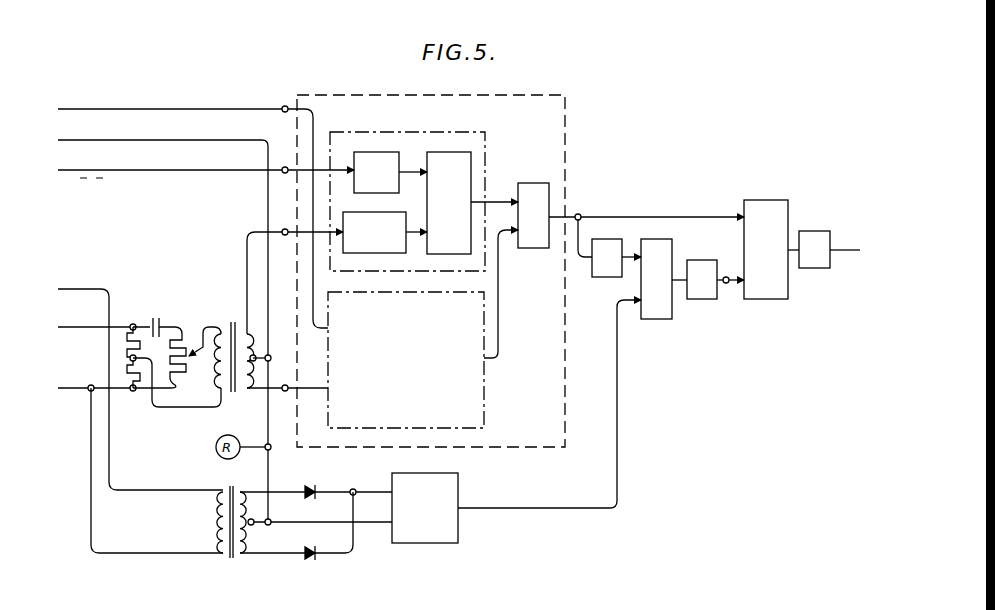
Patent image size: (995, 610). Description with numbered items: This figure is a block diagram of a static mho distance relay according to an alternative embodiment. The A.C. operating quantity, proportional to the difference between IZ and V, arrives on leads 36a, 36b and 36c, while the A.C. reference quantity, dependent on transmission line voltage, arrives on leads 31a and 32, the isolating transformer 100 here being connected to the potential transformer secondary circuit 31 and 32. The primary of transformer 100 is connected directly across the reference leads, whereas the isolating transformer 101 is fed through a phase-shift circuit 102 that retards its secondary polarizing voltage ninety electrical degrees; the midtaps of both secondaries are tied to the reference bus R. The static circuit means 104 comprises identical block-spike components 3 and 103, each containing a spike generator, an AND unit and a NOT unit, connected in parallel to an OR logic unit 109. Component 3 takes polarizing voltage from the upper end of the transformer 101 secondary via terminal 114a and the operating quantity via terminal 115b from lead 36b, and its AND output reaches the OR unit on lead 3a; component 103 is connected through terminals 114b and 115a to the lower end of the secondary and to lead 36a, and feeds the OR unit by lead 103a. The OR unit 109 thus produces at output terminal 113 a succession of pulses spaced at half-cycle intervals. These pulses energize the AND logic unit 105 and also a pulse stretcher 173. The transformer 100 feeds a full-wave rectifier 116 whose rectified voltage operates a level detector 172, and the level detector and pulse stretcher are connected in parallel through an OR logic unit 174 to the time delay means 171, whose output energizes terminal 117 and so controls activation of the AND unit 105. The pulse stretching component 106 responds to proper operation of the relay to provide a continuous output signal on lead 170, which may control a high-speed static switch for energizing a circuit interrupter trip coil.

The block-spike component 3 is at (398, 132).
The lead 3a is at (495, 201).
The potential transformer secondary circuit lead 31 is at (88, 289).
The lead 31a is at (96, 327).
The lead 32 is at (88, 388).
The upper lead 36a is at (99, 109).
The lower lead 36b is at (99, 170).
The lead 36c is at (99, 140).
The isolating transformer 100 is at (247, 489).
The isolating transformer 101 is at (240, 322).
The phase-shift circuit 102 is at (174, 314).
The block-spike component 103 is at (484, 386).
The lead 103a is at (499, 317).
The static circuit means 104 is at (565, 97).
The AND logic unit 105 is at (766, 200).
The pulse stretching component 106 is at (816, 231).
The OR logic unit 109 is at (534, 196).
The output terminal 113 is at (578, 213).
The terminal 114a is at (285, 229).
The terminal 114b is at (283, 391).
The terminal 115a is at (285, 106).
The terminal 115b is at (285, 173).
The full-wave rectifier 116 is at (343, 518).
The terminal 117 is at (727, 284).
The lead 170 is at (857, 254).
The time delay means 171 is at (705, 300).
The level detector 172 is at (422, 545).
The pulse stretcher 173 is at (596, 278).
The OR logic unit 174 is at (658, 320).